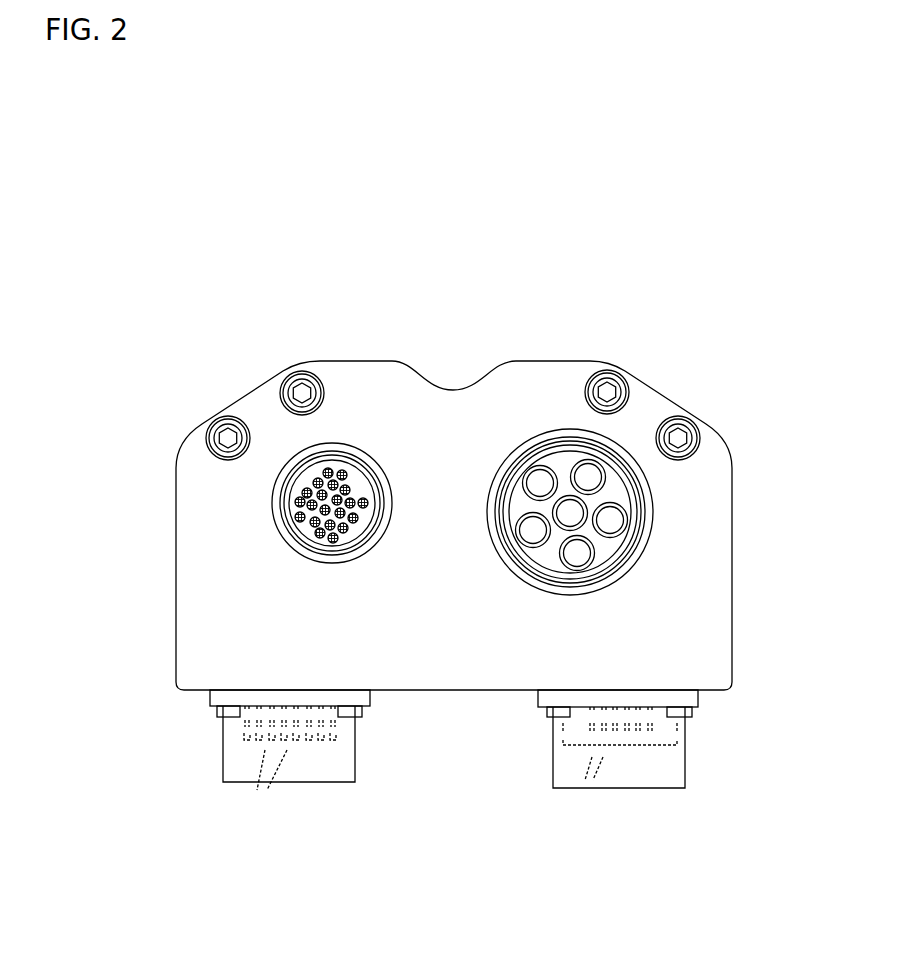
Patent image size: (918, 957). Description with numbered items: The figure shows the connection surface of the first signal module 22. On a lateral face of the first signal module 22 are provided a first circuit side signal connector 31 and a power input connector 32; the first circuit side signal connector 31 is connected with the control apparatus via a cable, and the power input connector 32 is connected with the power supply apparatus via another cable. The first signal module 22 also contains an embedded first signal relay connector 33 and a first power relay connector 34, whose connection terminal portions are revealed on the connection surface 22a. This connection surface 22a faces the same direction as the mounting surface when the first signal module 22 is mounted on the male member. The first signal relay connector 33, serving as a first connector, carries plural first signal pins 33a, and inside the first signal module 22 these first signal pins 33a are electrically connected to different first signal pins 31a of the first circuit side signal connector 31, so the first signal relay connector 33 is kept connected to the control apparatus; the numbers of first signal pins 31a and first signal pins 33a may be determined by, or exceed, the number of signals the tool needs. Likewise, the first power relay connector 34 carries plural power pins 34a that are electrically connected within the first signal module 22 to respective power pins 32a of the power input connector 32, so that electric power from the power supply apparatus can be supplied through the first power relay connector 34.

The first signal module 22 is at (732, 499).
The connection surface 22a is at (713, 572).
The first circuit side signal connector 31 is at (355, 763).
The first signal pins 31a is at (257, 797).
The power input connector 32 is at (685, 773).
The power pins 32a is at (580, 790).
The first signal relay connector 33 is at (357, 552).
The first signal pins 33a is at (300, 533).
The first power relay connector 34 is at (616, 580).
The power pins 34a is at (552, 558).